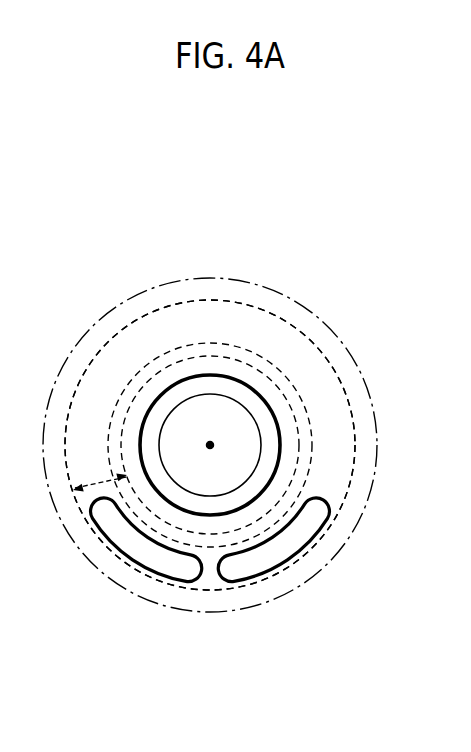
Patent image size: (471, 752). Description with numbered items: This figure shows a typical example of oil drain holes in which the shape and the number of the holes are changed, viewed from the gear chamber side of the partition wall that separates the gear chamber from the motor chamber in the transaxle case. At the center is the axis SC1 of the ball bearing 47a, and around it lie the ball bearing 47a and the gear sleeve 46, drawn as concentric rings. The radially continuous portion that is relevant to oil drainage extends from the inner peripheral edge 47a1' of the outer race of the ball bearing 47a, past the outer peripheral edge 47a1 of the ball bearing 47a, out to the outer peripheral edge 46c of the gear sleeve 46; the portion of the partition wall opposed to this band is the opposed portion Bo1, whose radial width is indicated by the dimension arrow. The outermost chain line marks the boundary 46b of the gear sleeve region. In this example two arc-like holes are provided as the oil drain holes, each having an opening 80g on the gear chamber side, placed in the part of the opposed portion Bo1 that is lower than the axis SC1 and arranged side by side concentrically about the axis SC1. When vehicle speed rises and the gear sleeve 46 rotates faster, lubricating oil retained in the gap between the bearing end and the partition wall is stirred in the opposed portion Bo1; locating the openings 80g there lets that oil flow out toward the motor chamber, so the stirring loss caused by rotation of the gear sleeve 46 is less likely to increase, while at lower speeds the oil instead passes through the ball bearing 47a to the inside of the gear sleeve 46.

The gear sleeve 46 is at (252, 330).
The outer edge of housing 46b is at (147, 289).
The outer peripheral edge of the gear sleeve 46c is at (303, 336).
The ball bearing 47a is at (285, 461).
The outer peripheral edge of the ball bearing 47a1 is at (285, 436).
The inner peripheral edge of the outer race of the ball bearing 47a1' is at (262, 420).
The axis of the ball bearing SC1 is at (213, 444).
The opening of the oil drain hole 80g is at (215, 608).
The opposed portion of the partition wall Bo1 is at (99, 476).